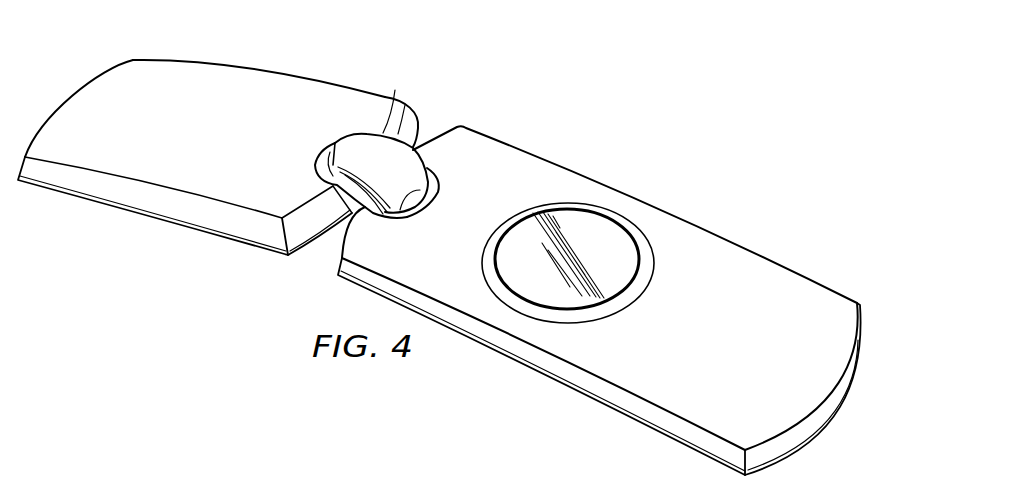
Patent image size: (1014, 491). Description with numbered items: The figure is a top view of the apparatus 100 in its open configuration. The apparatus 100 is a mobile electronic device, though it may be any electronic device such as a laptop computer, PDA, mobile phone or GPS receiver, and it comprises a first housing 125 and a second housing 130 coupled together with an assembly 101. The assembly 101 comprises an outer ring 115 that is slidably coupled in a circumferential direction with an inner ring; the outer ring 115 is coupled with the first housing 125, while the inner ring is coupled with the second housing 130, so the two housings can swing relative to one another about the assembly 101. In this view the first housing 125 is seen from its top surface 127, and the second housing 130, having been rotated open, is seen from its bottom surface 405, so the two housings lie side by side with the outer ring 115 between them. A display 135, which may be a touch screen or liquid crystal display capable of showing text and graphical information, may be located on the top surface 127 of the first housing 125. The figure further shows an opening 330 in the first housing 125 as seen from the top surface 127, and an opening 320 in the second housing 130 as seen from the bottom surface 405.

The apparatus 100 is at (439, 242).
The assembly 101 is at (373, 125).
The outer ring 115 is at (390, 152).
The first housing 125 is at (599, 288).
The top surface 127 is at (702, 248).
The second housing 130 is at (201, 132).
The display 135 is at (620, 277).
The opening 320 is at (333, 155).
The opening 330 is at (440, 192).
The bottom surface 405 is at (213, 82).